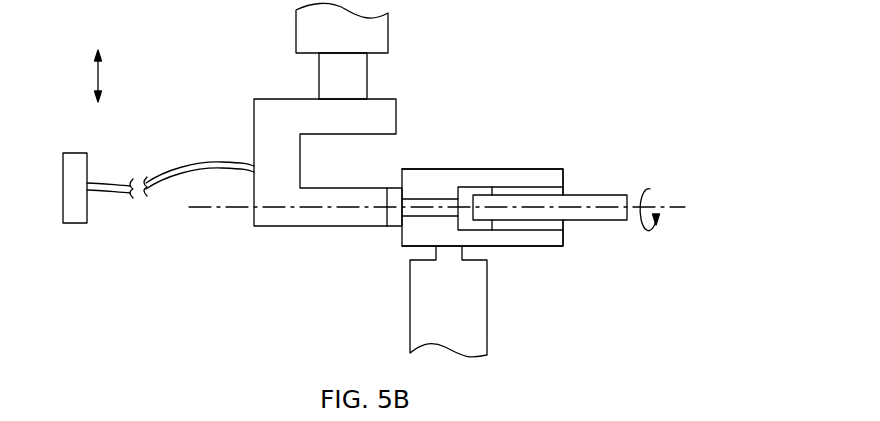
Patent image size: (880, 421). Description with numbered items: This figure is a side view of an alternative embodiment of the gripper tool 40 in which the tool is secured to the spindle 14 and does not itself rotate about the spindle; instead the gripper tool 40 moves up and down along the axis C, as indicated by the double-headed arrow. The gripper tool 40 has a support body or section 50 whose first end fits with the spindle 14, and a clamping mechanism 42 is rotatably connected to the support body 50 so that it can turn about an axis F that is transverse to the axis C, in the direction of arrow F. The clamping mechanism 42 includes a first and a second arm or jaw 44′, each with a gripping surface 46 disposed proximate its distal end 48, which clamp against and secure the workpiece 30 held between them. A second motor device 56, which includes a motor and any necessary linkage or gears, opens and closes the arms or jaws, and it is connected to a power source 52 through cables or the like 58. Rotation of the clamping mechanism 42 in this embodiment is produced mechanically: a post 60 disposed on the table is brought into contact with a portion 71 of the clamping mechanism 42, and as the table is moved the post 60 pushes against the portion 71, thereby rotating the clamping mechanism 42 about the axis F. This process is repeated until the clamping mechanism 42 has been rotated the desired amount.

The spindle 14 is at (388, 33).
The workpiece 30 is at (607, 220).
The gripper tool 40 is at (425, 98).
The clamping mechanism 42 is at (521, 115).
The arm or jaw 44′ is at (546, 169).
The gripping surface 46 is at (563, 193).
The distal end 48 is at (578, 169).
The support body or section 50 is at (236, 148).
The power source 52 is at (310, 73).
The second motor device 56 is at (395, 189).
The cables 58 is at (168, 186).
The post 60 is at (488, 337).
The portion of the clamping mechanism 71 is at (436, 230).
The axis C is at (99, 74).
The axis F is at (657, 194).